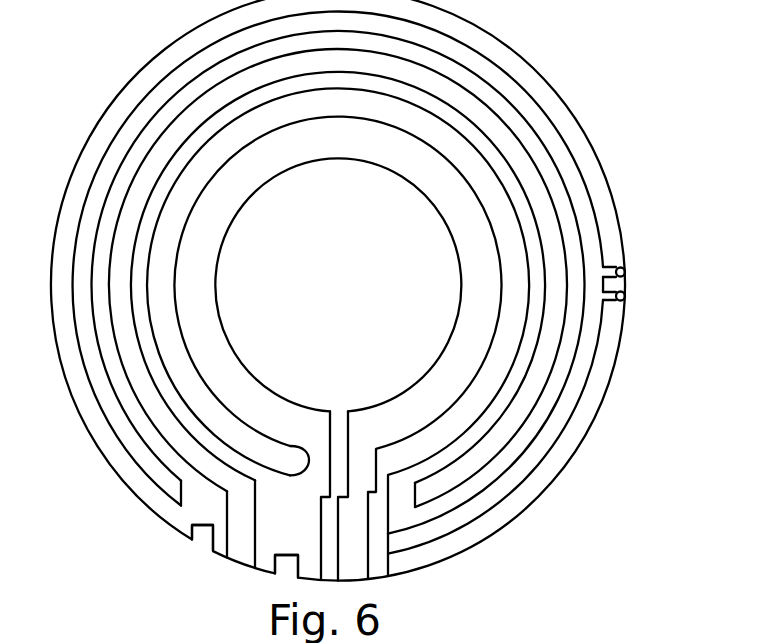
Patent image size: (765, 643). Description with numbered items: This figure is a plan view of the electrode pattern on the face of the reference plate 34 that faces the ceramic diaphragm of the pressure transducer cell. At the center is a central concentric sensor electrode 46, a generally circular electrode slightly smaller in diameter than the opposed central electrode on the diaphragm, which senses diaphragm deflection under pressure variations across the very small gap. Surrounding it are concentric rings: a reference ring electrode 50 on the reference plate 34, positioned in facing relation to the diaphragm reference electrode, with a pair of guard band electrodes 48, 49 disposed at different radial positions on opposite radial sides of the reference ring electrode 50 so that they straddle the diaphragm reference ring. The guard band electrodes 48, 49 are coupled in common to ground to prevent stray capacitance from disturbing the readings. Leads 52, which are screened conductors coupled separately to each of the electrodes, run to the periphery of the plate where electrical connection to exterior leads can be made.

The reference plate 34 is at (622, 228).
The central concentric sensor electrode 46 is at (438, 278).
The guard band electrode 48 is at (505, 355).
The guard band electrode 49 is at (557, 412).
The reference ring electrode 50 is at (487, 445).
The leads 52 is at (243, 540).